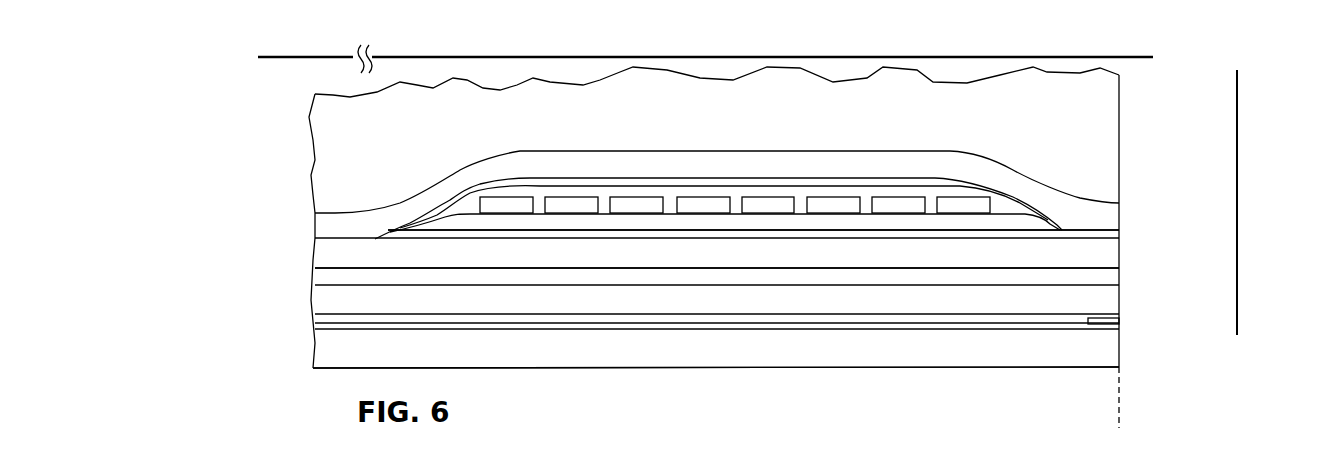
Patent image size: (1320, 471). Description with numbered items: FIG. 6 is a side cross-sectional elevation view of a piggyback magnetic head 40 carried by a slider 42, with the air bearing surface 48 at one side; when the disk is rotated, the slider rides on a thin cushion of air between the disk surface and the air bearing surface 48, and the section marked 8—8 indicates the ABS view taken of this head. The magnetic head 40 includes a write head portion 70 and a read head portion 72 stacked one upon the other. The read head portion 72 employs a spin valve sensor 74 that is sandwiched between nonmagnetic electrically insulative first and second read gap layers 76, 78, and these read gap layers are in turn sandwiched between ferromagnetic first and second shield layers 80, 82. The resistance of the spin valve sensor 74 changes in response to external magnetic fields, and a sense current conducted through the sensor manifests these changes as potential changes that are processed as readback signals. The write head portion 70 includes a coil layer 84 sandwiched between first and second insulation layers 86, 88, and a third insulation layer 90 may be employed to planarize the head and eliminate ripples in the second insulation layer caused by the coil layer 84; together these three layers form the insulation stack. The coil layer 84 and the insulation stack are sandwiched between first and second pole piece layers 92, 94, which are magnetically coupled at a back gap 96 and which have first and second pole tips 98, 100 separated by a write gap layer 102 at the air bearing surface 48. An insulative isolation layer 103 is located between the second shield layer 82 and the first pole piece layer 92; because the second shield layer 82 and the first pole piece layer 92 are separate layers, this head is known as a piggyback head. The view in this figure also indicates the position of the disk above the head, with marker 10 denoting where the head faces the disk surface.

The magnetic disk 10 is at (268, 48).
The magnetic head 40 is at (293, 104).
The slider 42 is at (1103, 107).
The write head portion 70 is at (303, 268).
The read head portion 72 is at (303, 368).
The spin valve sensor 74 is at (1119, 320).
The first read gap layer 76 is at (785, 332).
The second read gap layer 78 is at (752, 316).
The first shield layer 80 is at (887, 353).
The second shield layer 82 is at (990, 300).
The coil layer 84 is at (767, 202).
The first insulation layer 86 is at (675, 222).
The second insulation layer 88 is at (1005, 205).
The third insulation layer 90 is at (545, 181).
The first pole piece layer 92 is at (1037, 258).
The second pole piece layer 94 is at (902, 160).
The back gap 96 is at (352, 237).
The first pole tip 98 is at (1120, 255).
The second pole tip 100 is at (1113, 210).
The write gap layer 102 is at (1119, 232).
The insulative isolation layer 103 is at (945, 277).
The air bearing surface 48 is at (1120, 420).
The section line 8- 8 is at (1256, 77).